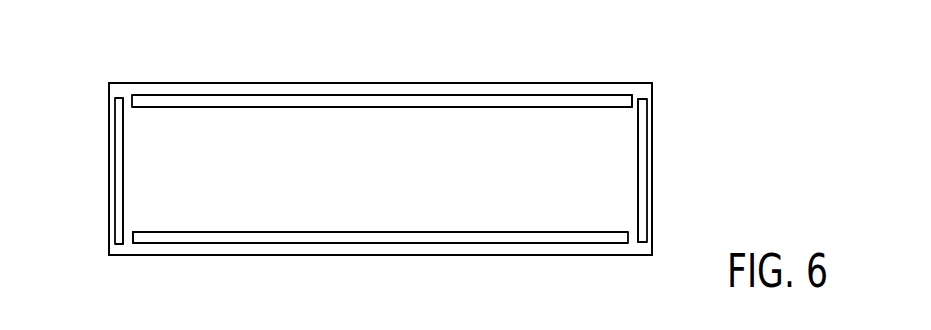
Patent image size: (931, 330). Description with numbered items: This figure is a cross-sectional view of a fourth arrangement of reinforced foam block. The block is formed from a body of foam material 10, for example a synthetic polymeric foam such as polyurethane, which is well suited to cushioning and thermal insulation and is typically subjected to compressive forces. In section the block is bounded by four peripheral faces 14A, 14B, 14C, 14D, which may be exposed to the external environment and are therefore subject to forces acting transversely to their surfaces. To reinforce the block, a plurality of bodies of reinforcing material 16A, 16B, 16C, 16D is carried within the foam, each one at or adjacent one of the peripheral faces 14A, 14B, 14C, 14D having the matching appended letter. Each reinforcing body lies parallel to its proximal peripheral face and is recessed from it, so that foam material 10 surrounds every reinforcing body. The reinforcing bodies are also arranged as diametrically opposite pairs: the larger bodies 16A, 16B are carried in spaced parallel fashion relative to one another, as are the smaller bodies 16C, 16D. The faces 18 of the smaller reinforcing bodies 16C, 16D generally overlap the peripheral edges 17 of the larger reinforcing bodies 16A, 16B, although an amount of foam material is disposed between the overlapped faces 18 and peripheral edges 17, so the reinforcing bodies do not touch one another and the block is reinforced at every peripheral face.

The body of foam material 10 is at (245, 200).
The peripheral face 14A is at (342, 83).
The peripheral face 14B is at (477, 255).
The peripheral face 14C is at (108, 143).
The peripheral face 14D is at (653, 123).
The body of reinforcing material 16A is at (498, 102).
The body of reinforcing material 16B is at (397, 235).
The body of reinforcing material 16C is at (120, 180).
The body of reinforcing material 16D is at (643, 170).
The peripheral edges 17 is at (629, 96).
The faces 18 is at (123, 157).